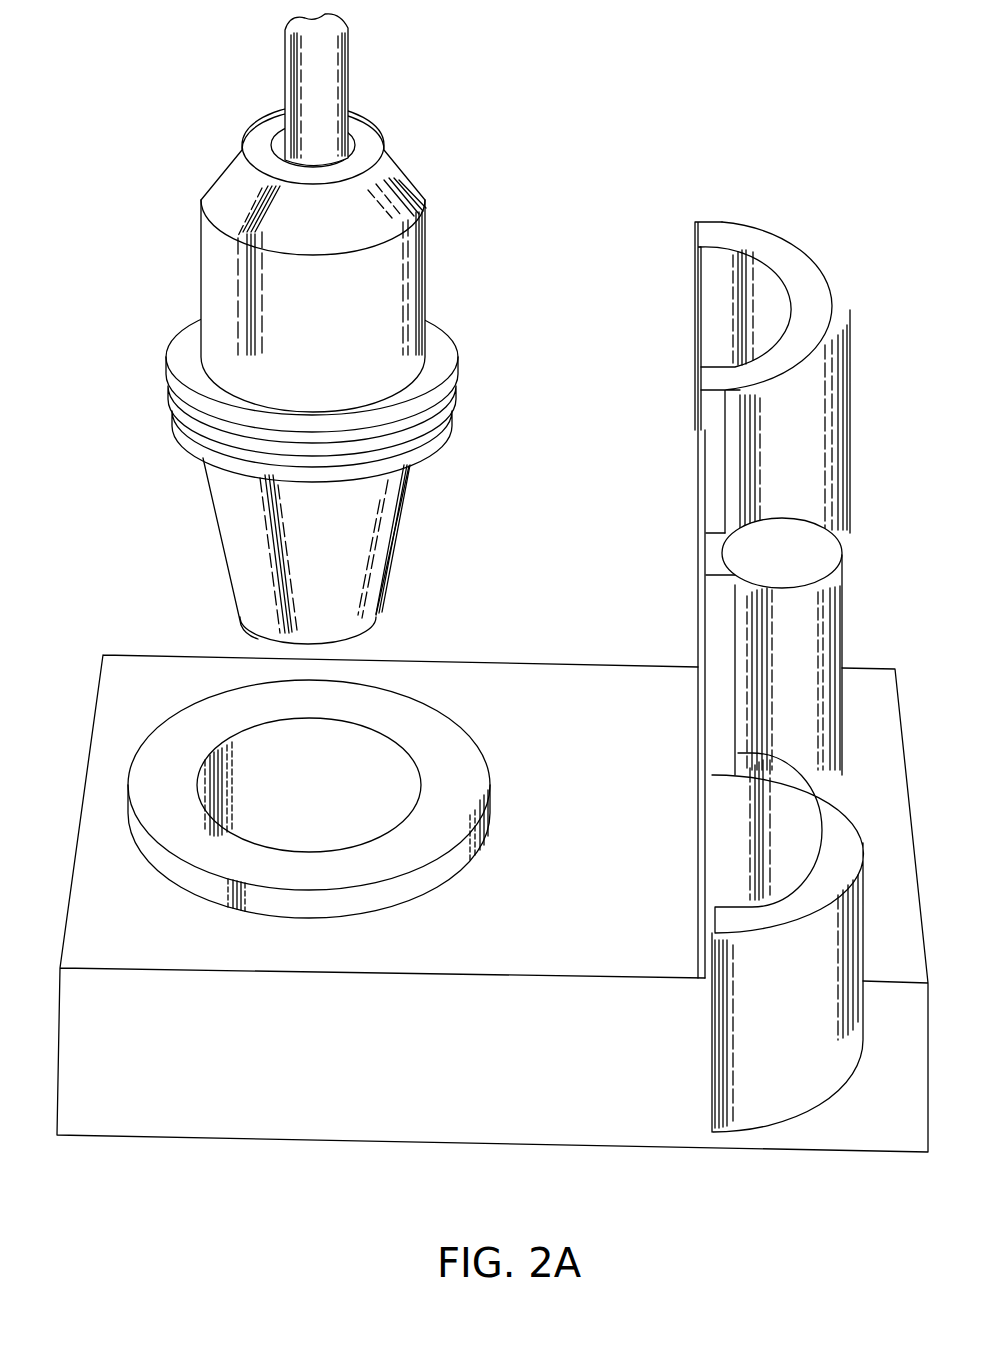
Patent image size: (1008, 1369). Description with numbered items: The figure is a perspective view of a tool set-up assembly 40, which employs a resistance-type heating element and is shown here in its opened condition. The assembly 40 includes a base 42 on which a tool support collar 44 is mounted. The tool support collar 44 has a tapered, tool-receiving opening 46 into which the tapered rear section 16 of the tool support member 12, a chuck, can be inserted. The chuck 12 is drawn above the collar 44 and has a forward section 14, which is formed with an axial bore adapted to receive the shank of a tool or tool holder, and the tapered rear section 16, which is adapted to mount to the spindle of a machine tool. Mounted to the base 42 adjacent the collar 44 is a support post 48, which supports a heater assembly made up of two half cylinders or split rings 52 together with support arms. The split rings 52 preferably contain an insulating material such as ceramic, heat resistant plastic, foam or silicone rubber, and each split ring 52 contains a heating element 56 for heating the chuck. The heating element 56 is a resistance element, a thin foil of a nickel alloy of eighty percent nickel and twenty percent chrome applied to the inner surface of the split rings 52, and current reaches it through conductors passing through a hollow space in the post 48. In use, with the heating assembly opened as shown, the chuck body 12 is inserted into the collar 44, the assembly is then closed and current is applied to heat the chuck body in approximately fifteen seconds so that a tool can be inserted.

The tool support member 12 is at (280, 329).
The forward section 14 is at (210, 240).
The tapered rear section 16 is at (237, 508).
The tool set-up assembly 40 is at (806, 637).
The base 42 is at (145, 682).
The tool support collar 44 is at (309, 738).
The tool-receiving opening 46 is at (272, 765).
The support post 48 is at (808, 658).
The split rings 52 is at (810, 262).
The heating element 56 is at (722, 263).